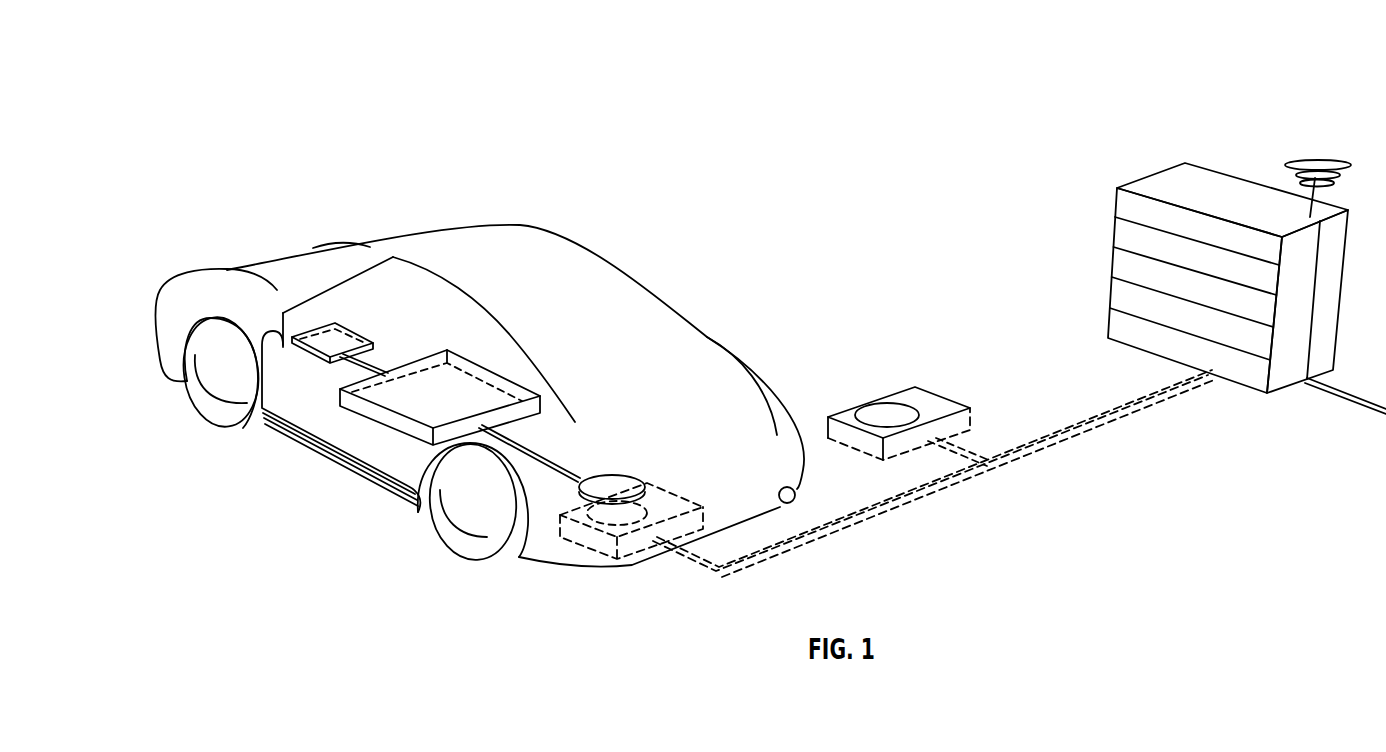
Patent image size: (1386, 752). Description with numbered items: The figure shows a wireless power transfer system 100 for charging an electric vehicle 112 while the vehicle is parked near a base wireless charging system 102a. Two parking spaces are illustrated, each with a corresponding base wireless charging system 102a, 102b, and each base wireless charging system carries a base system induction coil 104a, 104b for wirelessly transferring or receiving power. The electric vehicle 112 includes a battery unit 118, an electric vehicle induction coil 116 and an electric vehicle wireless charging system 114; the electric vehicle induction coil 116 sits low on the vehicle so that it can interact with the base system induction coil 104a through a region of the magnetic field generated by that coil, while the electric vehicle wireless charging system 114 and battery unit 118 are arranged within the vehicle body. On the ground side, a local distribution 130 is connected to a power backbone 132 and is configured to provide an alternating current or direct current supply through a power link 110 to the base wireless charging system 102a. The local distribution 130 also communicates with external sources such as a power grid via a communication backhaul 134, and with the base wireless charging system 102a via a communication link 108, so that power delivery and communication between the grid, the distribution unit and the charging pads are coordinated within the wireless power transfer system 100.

The wireless power transfer system 100 is at (474, 84).
The base wireless charging system 102a is at (563, 508).
The base wireless charging system 102b is at (848, 408).
The base system induction coil 104a is at (650, 515).
The base system induction coil 104b is at (897, 403).
The communication link 108 is at (1097, 416).
The power link 110 is at (1088, 436).
The electric vehicle 112 is at (272, 257).
The electric vehicle wireless charging system 114 is at (343, 382).
The electric vehicle induction coil 116 is at (612, 482).
The battery unit 118 is at (351, 330).
The local distribution 130 is at (1153, 180).
The power backbone 132 is at (1360, 397).
The communication backhaul 134 is at (1320, 155).